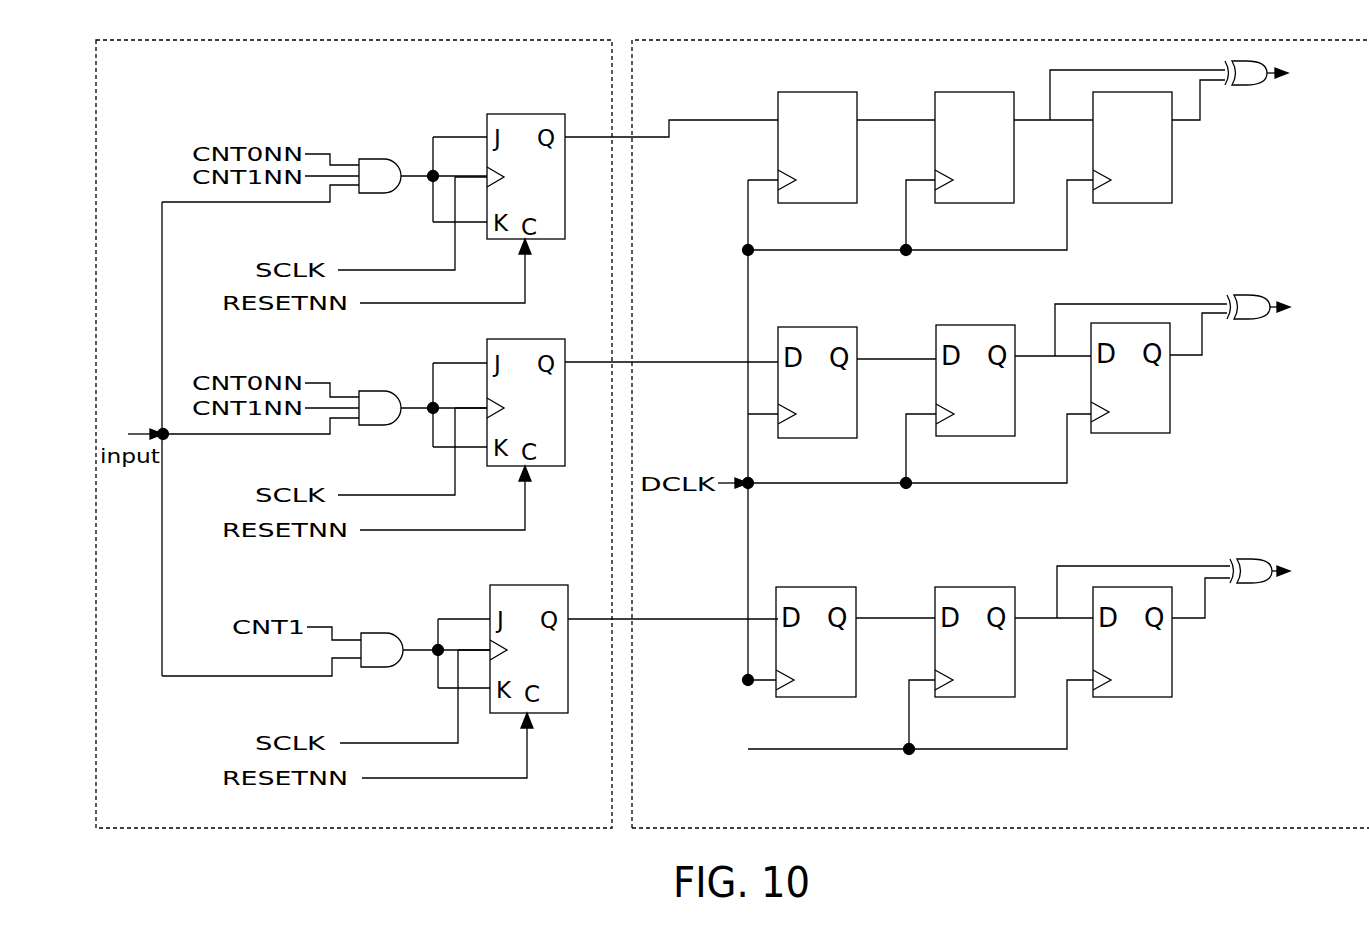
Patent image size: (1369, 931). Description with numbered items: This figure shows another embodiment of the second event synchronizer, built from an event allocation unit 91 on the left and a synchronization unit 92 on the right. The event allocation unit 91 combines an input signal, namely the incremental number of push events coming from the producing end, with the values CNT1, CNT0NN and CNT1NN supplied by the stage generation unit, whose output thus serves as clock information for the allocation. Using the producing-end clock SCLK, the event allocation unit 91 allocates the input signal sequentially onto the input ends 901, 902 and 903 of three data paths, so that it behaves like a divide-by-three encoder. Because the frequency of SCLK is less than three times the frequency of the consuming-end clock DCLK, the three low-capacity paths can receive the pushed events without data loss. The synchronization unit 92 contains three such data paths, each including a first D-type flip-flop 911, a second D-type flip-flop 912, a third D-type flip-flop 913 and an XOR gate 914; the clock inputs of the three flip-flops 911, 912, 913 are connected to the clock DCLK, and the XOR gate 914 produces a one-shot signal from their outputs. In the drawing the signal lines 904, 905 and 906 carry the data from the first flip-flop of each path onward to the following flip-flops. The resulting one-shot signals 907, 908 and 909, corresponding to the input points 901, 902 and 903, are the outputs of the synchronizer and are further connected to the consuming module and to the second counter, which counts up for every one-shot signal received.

The event allocation unit 91 is at (518, 827).
The synchronization unit 92 is at (1097, 828).
The input end of the first data path 901 is at (707, 119).
The input end of the second data path 902 is at (708, 360).
The input end of the third data path 903 is at (708, 618).
The first D flip-flop output signal line 904 is at (897, 121).
The second-row first D flip-flop output signal line 905 is at (903, 358).
The third-row first D flip-flop output signal line 906 is at (913, 617).
The one-shot signal 907 is at (1301, 73).
The one-shot signal 908 is at (1303, 307).
The one-shot signal 909 is at (1312, 571).
The first D-type flip-flop 911 is at (803, 92).
The second D-type flip-flop 912 is at (978, 92).
The third D-type flip-flop 913 is at (1133, 203).
The XOR gate 914 is at (1247, 87).